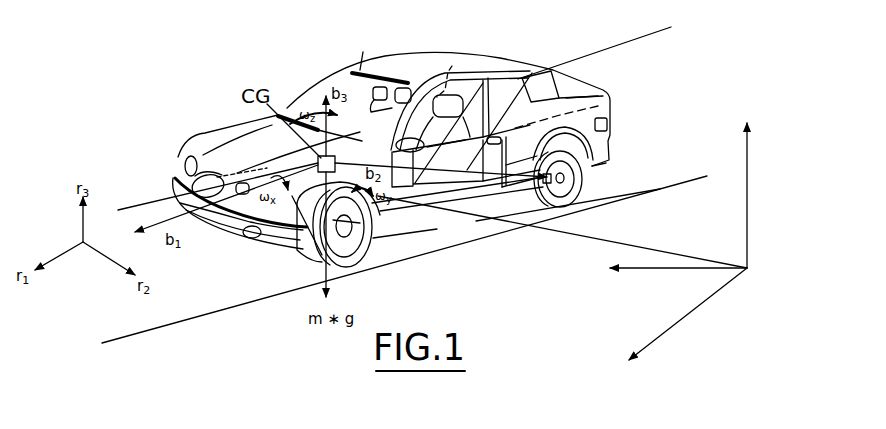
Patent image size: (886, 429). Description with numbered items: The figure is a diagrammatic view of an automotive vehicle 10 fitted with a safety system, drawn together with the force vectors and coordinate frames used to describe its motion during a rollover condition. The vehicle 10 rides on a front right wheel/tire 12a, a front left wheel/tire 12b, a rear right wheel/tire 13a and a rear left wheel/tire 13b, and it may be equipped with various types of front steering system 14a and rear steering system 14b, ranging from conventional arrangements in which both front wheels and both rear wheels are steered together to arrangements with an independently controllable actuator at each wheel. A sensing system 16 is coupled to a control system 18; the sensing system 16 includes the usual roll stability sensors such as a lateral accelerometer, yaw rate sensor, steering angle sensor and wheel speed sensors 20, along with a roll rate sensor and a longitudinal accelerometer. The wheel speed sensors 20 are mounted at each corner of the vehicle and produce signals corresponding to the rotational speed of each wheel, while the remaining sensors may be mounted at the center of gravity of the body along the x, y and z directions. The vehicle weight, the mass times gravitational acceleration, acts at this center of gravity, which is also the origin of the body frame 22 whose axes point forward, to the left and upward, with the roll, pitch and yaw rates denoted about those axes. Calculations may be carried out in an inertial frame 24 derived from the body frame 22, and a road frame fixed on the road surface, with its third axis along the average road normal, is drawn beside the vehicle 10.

The automotive vehicle 10 is at (422, 58).
The front right wheel/tire 12a is at (181, 160).
The front left wheel/tire 12b is at (352, 270).
The rear right wheel/tire 13a is at (452, 66).
The rear left wheel/tire 13b is at (585, 188).
The front steering system 14a is at (302, 240).
The rear steering system 14b is at (620, 108).
The sensing system 16 is at (363, 51).
The control system 18 is at (483, 83).
The wheel speed sensors 20 is at (516, 213).
The body frame 22 is at (161, 222).
The inertial frame 24 is at (748, 271).